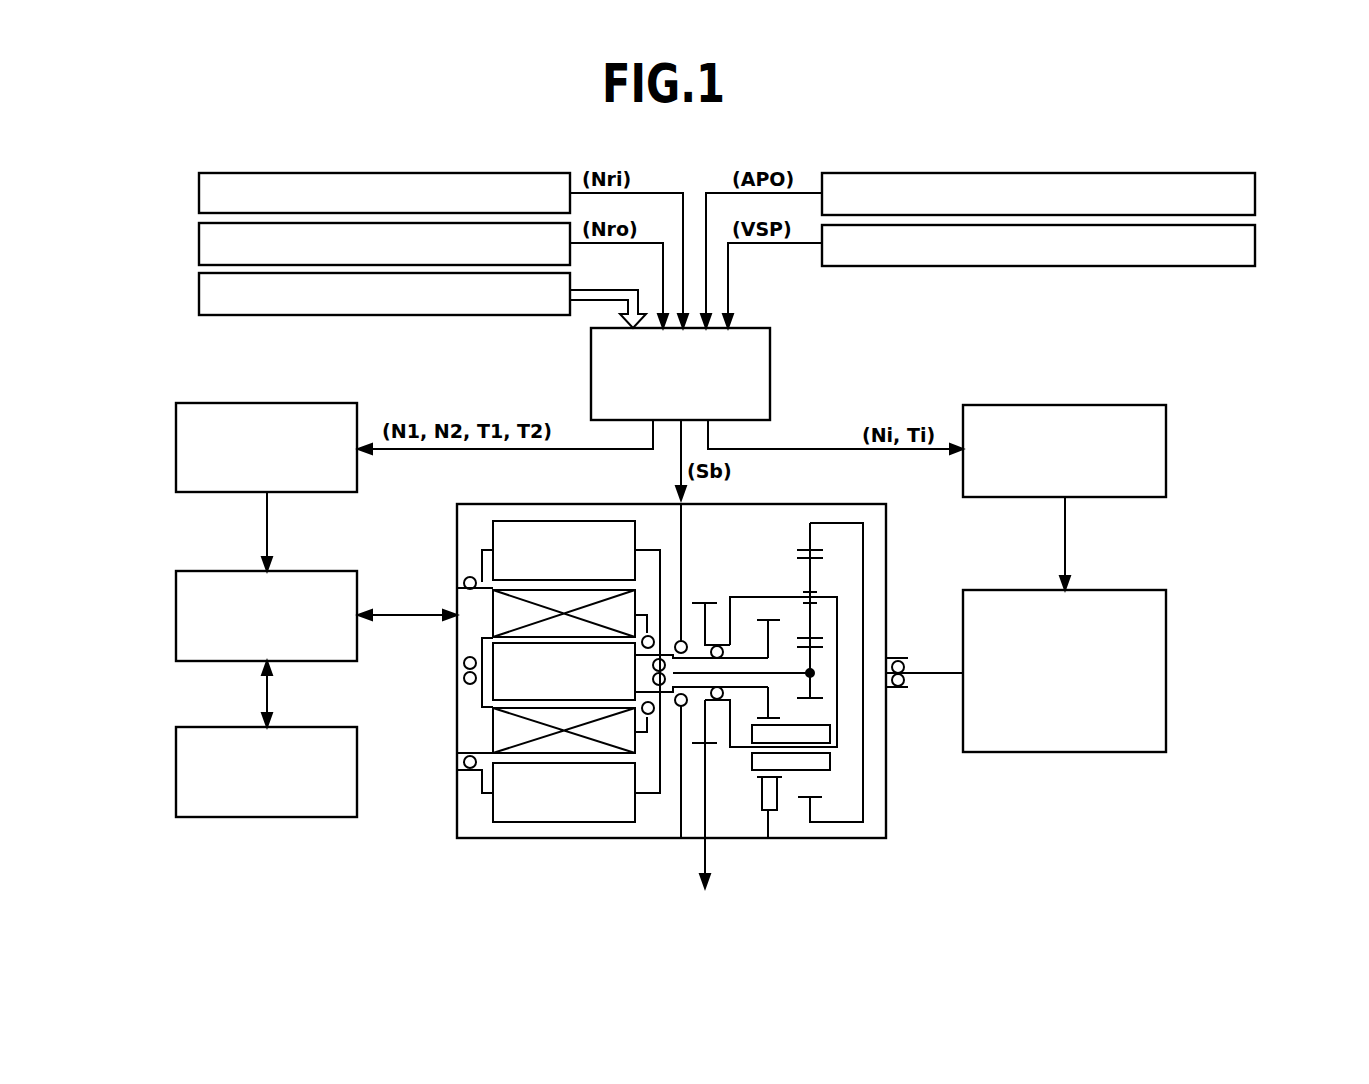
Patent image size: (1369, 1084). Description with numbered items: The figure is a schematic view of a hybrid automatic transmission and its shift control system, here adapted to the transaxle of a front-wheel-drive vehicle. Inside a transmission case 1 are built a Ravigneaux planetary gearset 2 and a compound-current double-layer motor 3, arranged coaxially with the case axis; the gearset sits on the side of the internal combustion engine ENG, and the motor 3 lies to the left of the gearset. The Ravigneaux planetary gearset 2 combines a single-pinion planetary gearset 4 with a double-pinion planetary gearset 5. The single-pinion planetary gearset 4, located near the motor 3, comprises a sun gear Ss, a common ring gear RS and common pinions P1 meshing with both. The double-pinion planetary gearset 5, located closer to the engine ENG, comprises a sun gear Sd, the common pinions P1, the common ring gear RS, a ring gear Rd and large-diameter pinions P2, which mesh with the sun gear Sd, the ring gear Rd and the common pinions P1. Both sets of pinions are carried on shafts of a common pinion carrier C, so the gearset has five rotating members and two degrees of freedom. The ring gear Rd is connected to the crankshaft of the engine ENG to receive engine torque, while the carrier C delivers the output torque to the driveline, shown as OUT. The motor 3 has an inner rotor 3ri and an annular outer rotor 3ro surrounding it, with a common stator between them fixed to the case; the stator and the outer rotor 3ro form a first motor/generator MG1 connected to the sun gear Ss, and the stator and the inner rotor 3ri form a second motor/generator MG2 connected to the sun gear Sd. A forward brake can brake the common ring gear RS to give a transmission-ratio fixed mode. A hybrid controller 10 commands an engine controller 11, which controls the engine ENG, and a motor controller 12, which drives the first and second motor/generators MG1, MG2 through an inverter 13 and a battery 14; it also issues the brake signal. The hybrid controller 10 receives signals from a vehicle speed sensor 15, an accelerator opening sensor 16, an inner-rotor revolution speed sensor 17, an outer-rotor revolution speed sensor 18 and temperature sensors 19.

The transmission case 1 is at (563, 838).
The Ravigneaux planetary gearset 2 is at (791, 786).
The compound-current double-layer motor 3 is at (505, 717).
The inner rotor 3ri is at (483, 692).
The outer rotor 3ro is at (475, 787).
The single-pinion planetary gearset 4 is at (783, 710).
The double-pinion planetary gearset 5 is at (837, 670).
The hybrid controller 10 is at (771, 362).
The engine controller 11 is at (1118, 405).
The motor controller 12 is at (306, 403).
The inverter 13 is at (306, 571).
The battery 14 is at (306, 727).
The vehicle speed sensor 15 is at (1257, 245).
The accelerator opening sensor 16 is at (1257, 193).
The inner-rotor revolution speed sensor 17 is at (199, 192).
The outer-rotor revolution speed sensor 18 is at (199, 243).
The temperature sensors 19 is at (199, 293).
The first motor/generator MG1 is at (499, 794).
The second motor/generator MG2 is at (470, 721).
The sun gear Ss is at (758, 616).
The sun gear Sd is at (824, 702).
The ring gear Rd is at (803, 544).
The common pinions P1 is at (828, 776).
The large-diameter pinions P2 is at (805, 562).
The common pinion carrier C is at (838, 738).
The common ring gear RS is at (760, 778).
The output OUT is at (709, 830).
The internal combustion engine ENG is at (1127, 590).